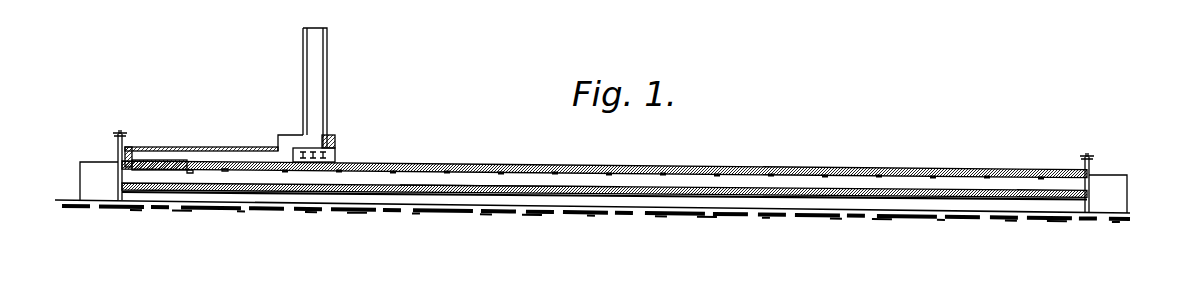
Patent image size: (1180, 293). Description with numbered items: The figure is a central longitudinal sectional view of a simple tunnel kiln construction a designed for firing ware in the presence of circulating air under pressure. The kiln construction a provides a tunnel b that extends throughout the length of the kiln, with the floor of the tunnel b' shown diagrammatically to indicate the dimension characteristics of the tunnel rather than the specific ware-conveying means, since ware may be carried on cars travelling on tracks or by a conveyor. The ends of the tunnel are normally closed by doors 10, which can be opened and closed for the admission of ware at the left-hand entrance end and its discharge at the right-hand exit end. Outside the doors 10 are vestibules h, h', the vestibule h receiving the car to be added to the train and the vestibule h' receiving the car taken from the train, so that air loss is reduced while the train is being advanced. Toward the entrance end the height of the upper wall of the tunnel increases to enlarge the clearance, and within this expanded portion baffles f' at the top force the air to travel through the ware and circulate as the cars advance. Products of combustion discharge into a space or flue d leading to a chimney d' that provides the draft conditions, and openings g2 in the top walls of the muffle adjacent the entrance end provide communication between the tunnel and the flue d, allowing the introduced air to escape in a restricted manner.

The tunnel kiln construction a is at (722, 166).
The tunnel b is at (604, 169).
The floor of the tunnel b' is at (510, 160).
The baffles f' is at (663, 153).
The flue d is at (214, 144).
The chimney d' is at (328, 95).
The openings g2 is at (143, 148).
The vestibule h is at (79, 178).
The vestibule h' is at (1121, 178).
The doors 10 is at (118, 171).